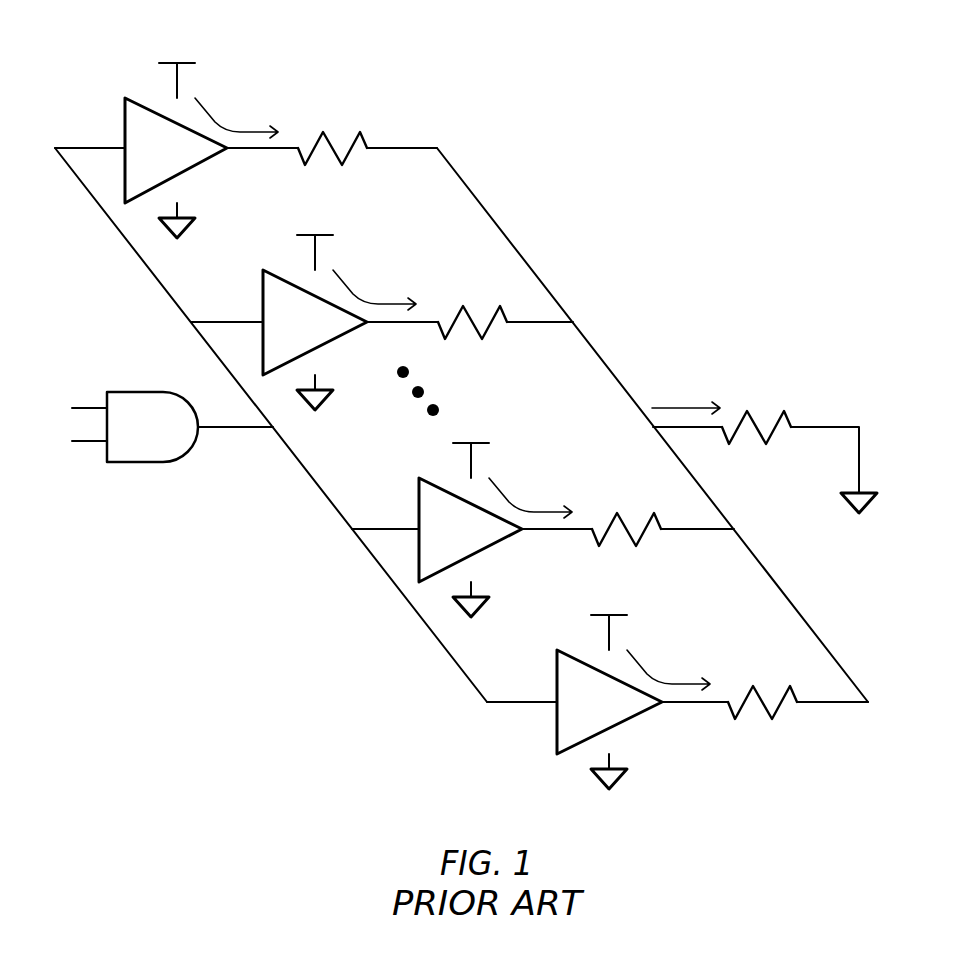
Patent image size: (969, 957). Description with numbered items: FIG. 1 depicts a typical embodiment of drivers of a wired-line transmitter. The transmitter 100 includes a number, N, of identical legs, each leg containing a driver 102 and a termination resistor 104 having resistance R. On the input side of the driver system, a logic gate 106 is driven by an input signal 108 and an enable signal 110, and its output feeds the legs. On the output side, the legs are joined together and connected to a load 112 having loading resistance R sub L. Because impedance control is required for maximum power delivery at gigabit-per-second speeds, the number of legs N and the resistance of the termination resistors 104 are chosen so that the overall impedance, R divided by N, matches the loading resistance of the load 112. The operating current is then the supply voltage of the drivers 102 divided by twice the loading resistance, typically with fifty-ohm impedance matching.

The transmitter 100 is at (597, 104).
The driver 102 is at (147, 100).
The termination resistor 104 is at (347, 163).
The logic gate 106 is at (182, 459).
The input signal 108 is at (68, 407).
The enable signal 110 is at (68, 441).
The load 112 is at (772, 438).